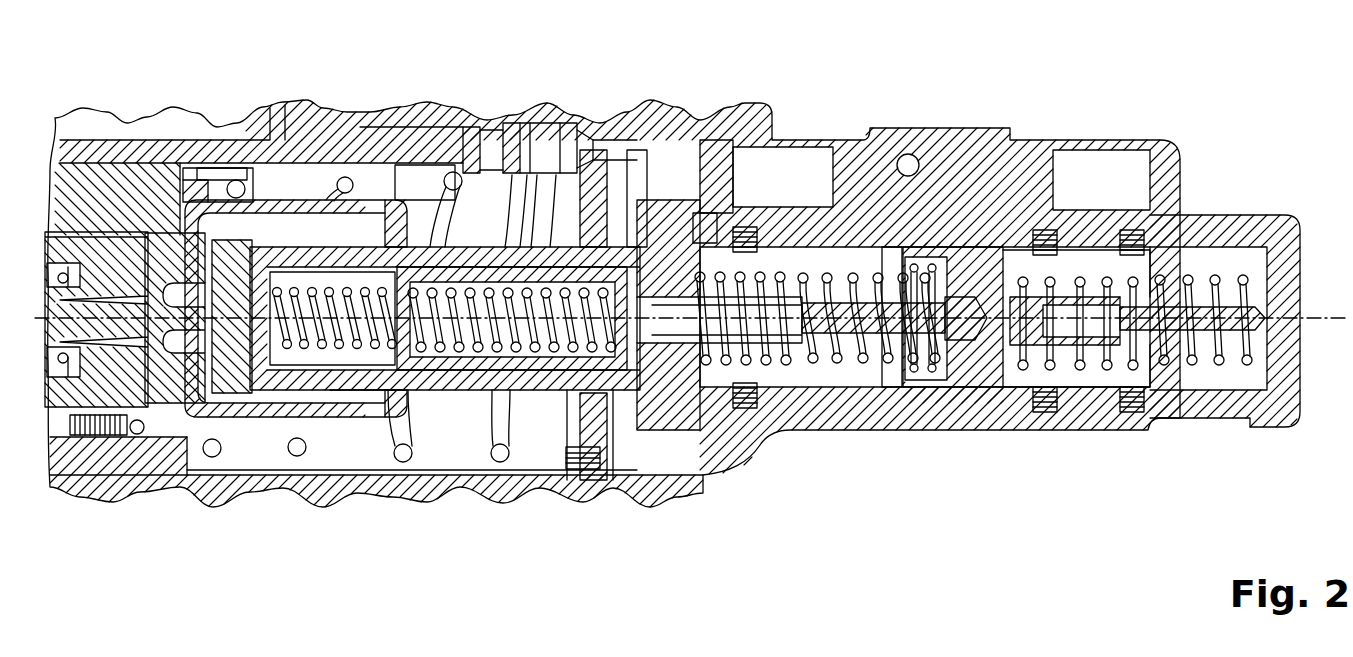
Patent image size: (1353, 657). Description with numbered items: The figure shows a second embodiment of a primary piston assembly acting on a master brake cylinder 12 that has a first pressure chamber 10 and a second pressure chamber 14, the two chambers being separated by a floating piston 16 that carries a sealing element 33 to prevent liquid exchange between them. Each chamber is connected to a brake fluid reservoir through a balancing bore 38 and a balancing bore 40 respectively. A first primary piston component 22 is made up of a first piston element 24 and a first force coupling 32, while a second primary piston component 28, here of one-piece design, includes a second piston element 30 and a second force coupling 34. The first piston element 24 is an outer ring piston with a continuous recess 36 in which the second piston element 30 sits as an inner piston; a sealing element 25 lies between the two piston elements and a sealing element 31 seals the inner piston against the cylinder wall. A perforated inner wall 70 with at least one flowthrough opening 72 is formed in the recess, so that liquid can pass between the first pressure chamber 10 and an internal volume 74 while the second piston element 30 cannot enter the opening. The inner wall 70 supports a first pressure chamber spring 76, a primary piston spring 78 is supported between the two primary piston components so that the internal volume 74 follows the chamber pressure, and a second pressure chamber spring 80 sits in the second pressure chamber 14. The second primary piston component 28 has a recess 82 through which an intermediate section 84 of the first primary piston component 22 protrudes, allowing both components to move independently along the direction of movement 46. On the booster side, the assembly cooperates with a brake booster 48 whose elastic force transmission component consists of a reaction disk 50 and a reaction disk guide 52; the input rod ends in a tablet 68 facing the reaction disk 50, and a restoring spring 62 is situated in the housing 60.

The first pressure chamber 10 is at (825, 432).
The master brake cylinder 12 is at (1220, 232).
The second pressure chamber 14 is at (1227, 375).
The floating piston 16 is at (957, 405).
The first primary piston component 22 is at (345, 400).
The first piston element 24 is at (540, 392).
The sealing element 25 is at (630, 252).
The second primary piston component 28 is at (297, 195).
The second piston element 30 is at (452, 398).
The sealing element 31 is at (742, 225).
The first force coupling 32 is at (300, 392).
The sealing element 33 is at (1043, 414).
The second force coupling 34 is at (187, 440).
The continuous recess 36 is at (668, 252).
The balancing bore 38 is at (796, 185).
The balancing bore 40 is at (1108, 183).
The direction of movement 46 is at (1323, 328).
The brake booster 48 is at (118, 162).
The reaction disk 50 is at (222, 440).
The reaction disk guide 52 is at (226, 200).
The housing 60 is at (420, 183).
The restoring spring 62 is at (430, 247).
The tablet 68 is at (147, 437).
The inner wall 70 is at (690, 432).
The flowthrough opening 72 is at (700, 250).
The internal volume 74 is at (600, 472).
The first pressure chamber spring 76 is at (862, 432).
The primary piston spring 78 is at (495, 255).
The second pressure chamber spring 80 is at (1207, 365).
The recess 82 is at (372, 410).
The intermediate section 84 is at (373, 250).